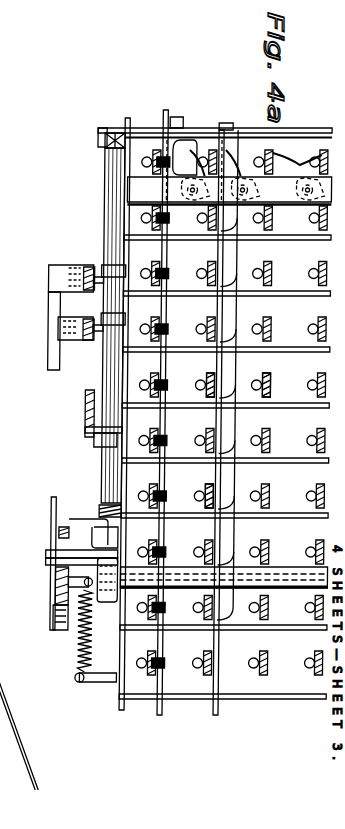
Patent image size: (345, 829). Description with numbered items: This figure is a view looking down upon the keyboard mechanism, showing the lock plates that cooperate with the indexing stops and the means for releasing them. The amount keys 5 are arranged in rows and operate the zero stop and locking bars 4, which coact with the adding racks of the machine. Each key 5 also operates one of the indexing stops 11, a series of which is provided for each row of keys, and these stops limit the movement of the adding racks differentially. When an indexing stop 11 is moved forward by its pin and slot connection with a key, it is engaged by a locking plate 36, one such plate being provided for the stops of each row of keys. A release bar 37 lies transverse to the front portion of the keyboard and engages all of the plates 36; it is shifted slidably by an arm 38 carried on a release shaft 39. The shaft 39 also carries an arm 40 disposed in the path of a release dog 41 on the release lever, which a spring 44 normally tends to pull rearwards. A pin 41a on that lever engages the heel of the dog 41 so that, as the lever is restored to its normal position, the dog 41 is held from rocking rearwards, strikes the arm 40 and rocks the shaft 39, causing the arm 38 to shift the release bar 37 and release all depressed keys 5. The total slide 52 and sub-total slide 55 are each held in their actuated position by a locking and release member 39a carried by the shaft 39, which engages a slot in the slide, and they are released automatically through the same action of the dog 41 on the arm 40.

The zero stop and locking bar 4 is at (165, 303).
The amount key 5 is at (207, 383).
The indexing stop 11 is at (227, 420).
The locking plate 36 is at (302, 163).
The release bar 37 is at (150, 147).
The arm 38 is at (107, 143).
The release shaft 39 is at (118, 245).
The locking and release member 39a is at (100, 282).
The arm 40 is at (68, 532).
The release dog 41 is at (60, 578).
The pin 41a is at (57, 597).
The spring 44 is at (83, 642).
The total slide 52 is at (52, 283).
The sub-total slide 55 is at (68, 338).